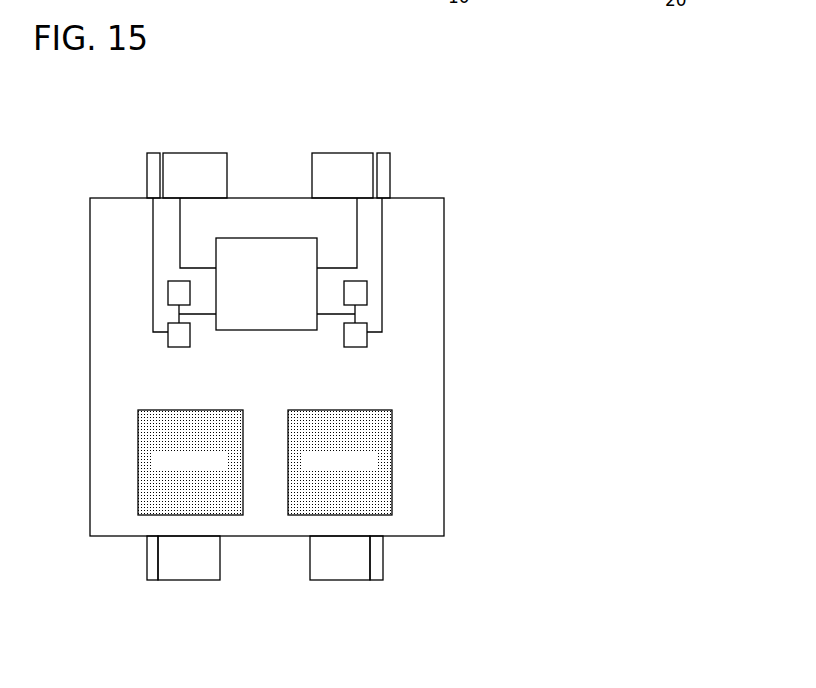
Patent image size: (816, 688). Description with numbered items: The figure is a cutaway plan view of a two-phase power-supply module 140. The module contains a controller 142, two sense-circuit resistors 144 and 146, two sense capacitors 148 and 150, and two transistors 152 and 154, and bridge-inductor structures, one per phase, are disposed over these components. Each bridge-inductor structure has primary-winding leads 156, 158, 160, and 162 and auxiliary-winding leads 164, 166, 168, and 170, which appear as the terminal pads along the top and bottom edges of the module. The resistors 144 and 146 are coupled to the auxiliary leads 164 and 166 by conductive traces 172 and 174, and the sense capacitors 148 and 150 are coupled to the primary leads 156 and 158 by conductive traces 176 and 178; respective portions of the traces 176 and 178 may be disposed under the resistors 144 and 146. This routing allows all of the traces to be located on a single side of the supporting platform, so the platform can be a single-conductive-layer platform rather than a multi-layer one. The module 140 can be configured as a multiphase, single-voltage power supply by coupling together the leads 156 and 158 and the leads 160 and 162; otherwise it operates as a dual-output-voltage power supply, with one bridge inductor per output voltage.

The two-phase power-supply module 140 is at (487, 149).
The controller 142 is at (243, 238).
The sense-circuit resistor 144 is at (168, 340).
The sense-circuit resistor 146 is at (367, 343).
The sense capacitor 148 is at (168, 296).
The sense capacitor 150 is at (367, 297).
The transistor 152 is at (148, 424).
The transistor 154 is at (388, 426).
The primary-winding lead 156 is at (197, 153).
The primary-winding lead 158 is at (345, 155).
The primary-winding lead 160 is at (346, 580).
The primary-winding lead 162 is at (186, 580).
The auxiliary-winding lead 164 is at (153, 153).
The auxiliary-winding lead 166 is at (385, 155).
The auxiliary-winding lead 168 is at (378, 580).
The auxiliary-winding lead 170 is at (148, 580).
The conductive trace 172 is at (153, 230).
The conductive trace 174 is at (382, 232).
The conductive trace 176 is at (180, 253).
The conductive trace 178 is at (357, 254).